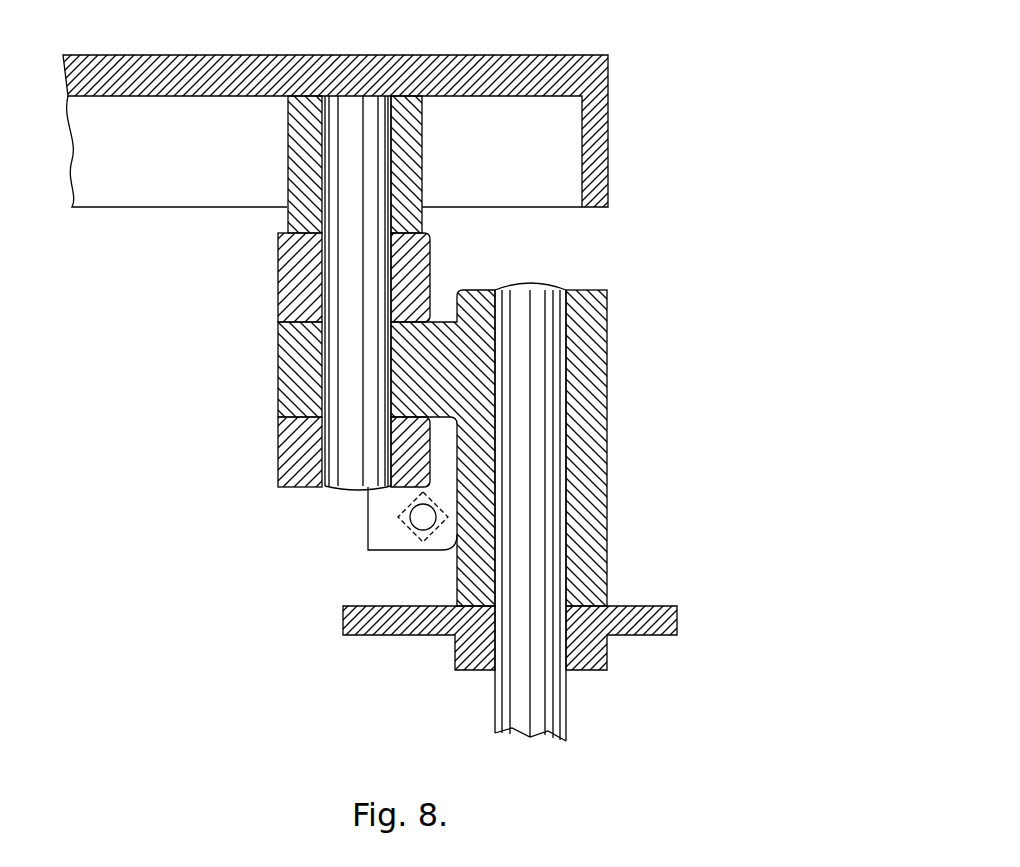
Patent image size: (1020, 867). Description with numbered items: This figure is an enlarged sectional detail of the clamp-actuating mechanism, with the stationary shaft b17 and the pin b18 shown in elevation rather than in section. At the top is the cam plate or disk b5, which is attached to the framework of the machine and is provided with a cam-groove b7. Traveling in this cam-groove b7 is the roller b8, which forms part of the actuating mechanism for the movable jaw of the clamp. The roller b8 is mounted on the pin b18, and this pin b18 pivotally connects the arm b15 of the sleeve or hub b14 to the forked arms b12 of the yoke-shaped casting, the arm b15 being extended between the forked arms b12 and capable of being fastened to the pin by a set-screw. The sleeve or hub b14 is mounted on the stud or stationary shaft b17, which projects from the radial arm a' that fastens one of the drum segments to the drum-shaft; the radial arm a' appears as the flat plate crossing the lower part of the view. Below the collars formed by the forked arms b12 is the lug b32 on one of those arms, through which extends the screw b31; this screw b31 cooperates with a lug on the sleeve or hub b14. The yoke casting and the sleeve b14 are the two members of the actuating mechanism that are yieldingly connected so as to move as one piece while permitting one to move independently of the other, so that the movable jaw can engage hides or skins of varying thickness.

The cam plate or disk b5 is at (463, 55).
The cam-groove b7 is at (507, 110).
The roller b8 is at (422, 157).
The forked arms b12 is at (278, 442).
The arm b15 is at (285, 362).
The pin b18 is at (347, 477).
The lug b32 is at (375, 538).
The screw b31 is at (422, 526).
The sleeve or hub b14 is at (600, 395).
The stud or stationary shaft b17 is at (563, 698).
The radial arm a' is at (510, 638).